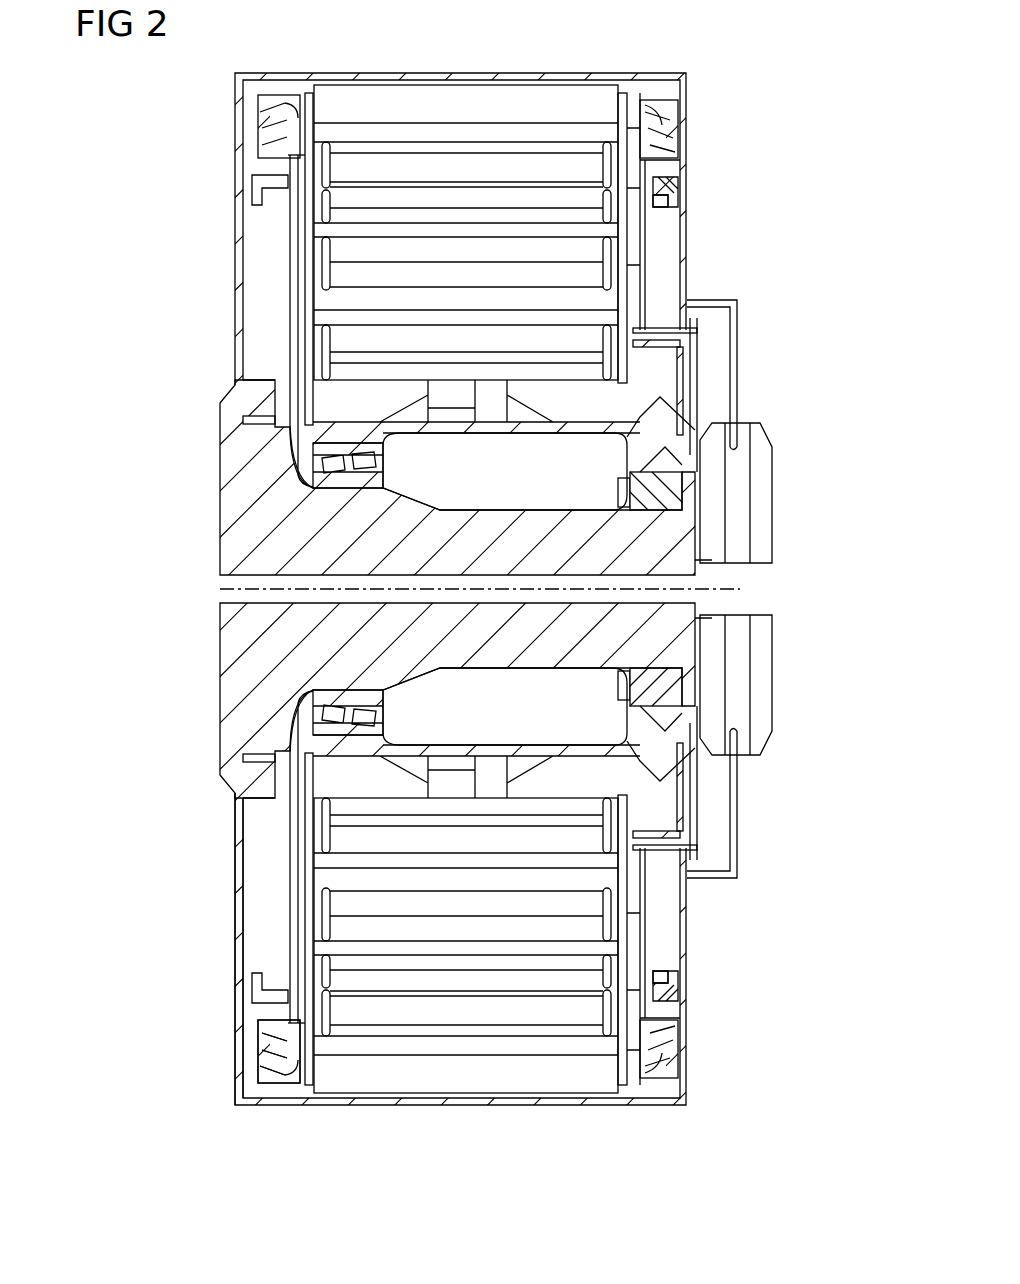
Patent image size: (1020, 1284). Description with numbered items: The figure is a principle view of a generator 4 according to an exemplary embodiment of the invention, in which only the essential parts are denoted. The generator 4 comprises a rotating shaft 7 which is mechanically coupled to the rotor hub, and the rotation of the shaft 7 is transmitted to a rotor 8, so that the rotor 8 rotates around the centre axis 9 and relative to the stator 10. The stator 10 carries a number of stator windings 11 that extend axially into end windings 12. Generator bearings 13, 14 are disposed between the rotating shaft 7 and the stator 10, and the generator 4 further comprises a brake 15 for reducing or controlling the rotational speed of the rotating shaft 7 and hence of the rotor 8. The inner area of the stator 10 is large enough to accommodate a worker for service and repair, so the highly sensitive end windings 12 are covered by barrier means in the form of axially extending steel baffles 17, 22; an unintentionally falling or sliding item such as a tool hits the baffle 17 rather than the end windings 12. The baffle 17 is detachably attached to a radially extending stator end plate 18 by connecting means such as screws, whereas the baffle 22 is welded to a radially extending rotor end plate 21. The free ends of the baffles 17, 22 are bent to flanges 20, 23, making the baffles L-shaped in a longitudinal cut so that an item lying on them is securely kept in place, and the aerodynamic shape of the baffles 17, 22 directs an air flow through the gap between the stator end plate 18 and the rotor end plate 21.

The generator 4 is at (744, 72).
The rotating shaft 7 is at (228, 648).
The rotor 8 is at (208, 925).
The centre axis 9 is at (222, 590).
The stator 10 is at (432, 1012).
The stator windings 11 is at (360, 1015).
The end windings 12 is at (258, 1040).
The generator bearing 13 is at (393, 462).
The generator bearing 14 is at (393, 712).
The brake 15 is at (772, 525).
The baffle 17 is at (279, 186).
The stator end plate 18 is at (300, 864).
The flange 20 is at (254, 191).
The rotor end plate 21 is at (236, 860).
The baffle 22 is at (678, 185).
The flange 23 is at (669, 201).